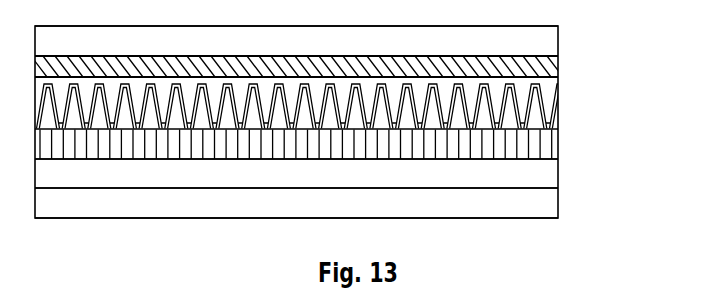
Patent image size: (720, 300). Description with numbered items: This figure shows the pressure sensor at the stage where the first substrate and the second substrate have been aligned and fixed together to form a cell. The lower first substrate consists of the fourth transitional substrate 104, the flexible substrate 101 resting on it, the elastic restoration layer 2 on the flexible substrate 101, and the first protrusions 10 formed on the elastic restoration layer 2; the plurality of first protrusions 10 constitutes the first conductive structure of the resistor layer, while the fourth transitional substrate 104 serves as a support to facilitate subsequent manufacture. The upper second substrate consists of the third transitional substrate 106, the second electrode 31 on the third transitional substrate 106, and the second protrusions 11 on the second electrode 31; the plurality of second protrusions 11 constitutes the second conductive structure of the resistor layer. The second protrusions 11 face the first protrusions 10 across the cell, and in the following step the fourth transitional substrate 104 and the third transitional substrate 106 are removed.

The third transitional substrate 106 is at (535, 34).
The second electrode 31 is at (537, 68).
The second protrusions 11 is at (540, 97).
The first protrusions 10 is at (527, 124).
The elastic restoration layer 2 is at (543, 147).
The flexible substrate 101 is at (547, 173).
The fourth transitional substrate 104 is at (547, 202).